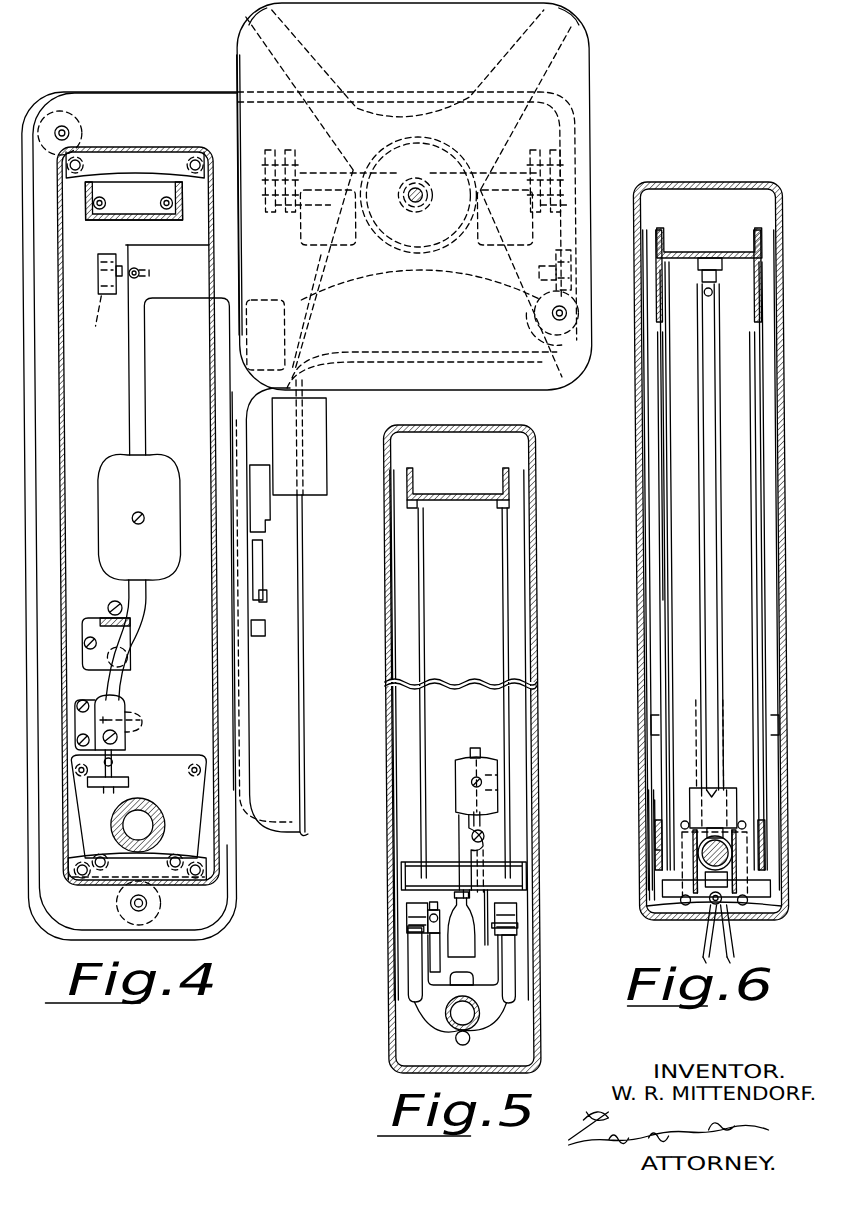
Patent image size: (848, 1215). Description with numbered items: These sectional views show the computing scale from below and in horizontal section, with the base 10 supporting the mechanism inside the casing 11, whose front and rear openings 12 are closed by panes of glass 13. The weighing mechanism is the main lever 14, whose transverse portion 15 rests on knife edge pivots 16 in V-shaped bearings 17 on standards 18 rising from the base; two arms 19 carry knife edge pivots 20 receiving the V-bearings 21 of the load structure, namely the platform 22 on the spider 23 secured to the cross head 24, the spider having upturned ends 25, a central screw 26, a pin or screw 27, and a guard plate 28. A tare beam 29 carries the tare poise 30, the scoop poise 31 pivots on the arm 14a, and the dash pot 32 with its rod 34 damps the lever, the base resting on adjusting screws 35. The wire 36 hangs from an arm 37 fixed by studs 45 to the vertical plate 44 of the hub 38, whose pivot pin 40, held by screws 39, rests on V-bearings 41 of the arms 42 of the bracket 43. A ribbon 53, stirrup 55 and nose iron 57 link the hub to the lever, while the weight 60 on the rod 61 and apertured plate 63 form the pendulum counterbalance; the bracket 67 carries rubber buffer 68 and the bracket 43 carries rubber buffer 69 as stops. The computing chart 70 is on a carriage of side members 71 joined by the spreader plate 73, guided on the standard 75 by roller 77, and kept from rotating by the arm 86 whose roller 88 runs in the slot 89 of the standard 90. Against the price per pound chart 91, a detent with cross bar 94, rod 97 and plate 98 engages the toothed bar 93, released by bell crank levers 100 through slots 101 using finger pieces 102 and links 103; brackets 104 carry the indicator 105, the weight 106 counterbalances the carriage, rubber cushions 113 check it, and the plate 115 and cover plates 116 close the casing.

In FIG. 4, the base 10 is at (95, 97).
In FIG. 4, the casing 11 is at (138, 151).
In FIG. 5, the casing 11 is at (533, 438).
In FIG. 6, the casing 11 is at (700, 186).
In FIG. 5, the openings 12 is at (383, 606).
In FIG. 6, the openings 12 is at (640, 547).
In FIG. 5, the panes of glass 13 is at (383, 753).
In FIG. 6, the panes of glass 13 is at (643, 598).
In FIG. 4, the main lever 14 is at (135, 381).
In FIG. 4, the arm 14a is at (243, 723).
In FIG. 4, the transverse portion 15 is at (167, 267).
In FIG. 4, the knife edge pivots 16 is at (127, 282).
In FIG. 4, the V-shaped bearings 17 is at (89, 322).
In FIG. 4, the standards 18 is at (97, 262).
In FIG. 4, the arms 19 is at (292, 233).
In FIG. 4, the knife edge pivots 20 is at (292, 193).
In FIG. 4, the V-bearings 21 is at (305, 173).
In FIG. 4, the platform 22 is at (414, 196).
In FIG. 4, the spider 23 is at (512, 60).
In FIG. 4, the cross head 24 is at (528, 173).
In FIG. 4, the upturned ends 25 is at (574, 8).
In FIG. 4, the central screw 26 is at (422, 202).
In FIG. 4, the pin or screw 27 is at (405, 193).
In FIG. 4, the guard plate 28 is at (241, 210).
In FIG. 4, the tare beam 29 is at (305, 594).
In FIG. 4, the tare poise 30 is at (310, 476).
In FIG. 4, the scoop poise 31 is at (265, 500).
In FIG. 4, the dash pot 32 is at (128, 712).
In FIG. 4, the rod 34 is at (145, 721).
In FIG. 4, the adjusting screws 35 is at (70, 133).
In FIG. 5, the wire 36 is at (518, 930).
In FIG. 5, the arm 37 is at (400, 873).
In FIG. 6, the arm 37 is at (645, 737).
In FIG. 5, the hub 38 is at (430, 958).
In FIG. 5, the screws 39 is at (455, 898).
In FIG. 5, the pivot pin 40 is at (420, 940).
In FIG. 5, the V-bearings 41 is at (407, 918).
In FIG. 5, the arms 42 is at (428, 998).
In FIG. 4, the bracket 43 is at (125, 808).
In FIG. 5, the bracket 43 is at (496, 1022).
In FIG. 5, the vertical plate 44 is at (462, 862).
In FIG. 5, the studs or bosses 45 is at (495, 872).
In FIG. 5, the ribbon 53 is at (420, 978).
In FIG. 4, the stirrup 55 is at (128, 783).
In FIG. 4, the nose iron 57 is at (115, 770).
In FIG. 5, the weight 60 is at (465, 764).
In FIG. 5, the rod 61 is at (478, 750).
In FIG. 5, the annular member or apertured plate 63 is at (472, 896).
In FIG. 4, the bracket 67 is at (100, 637).
In FIG. 4, the rubber buffer 68 is at (128, 660).
In FIG. 5, the rubber buffer 69 is at (478, 980).
In FIG. 6, the computing chart 70 is at (660, 452).
In FIG. 6, the side members 71 is at (700, 772).
In FIG. 6, the spreader plate 73 is at (726, 814).
In FIG. 4, the standard 75 is at (152, 814).
In FIG. 5, the standard 75 is at (446, 1020).
In FIG. 6, the roller 77 is at (746, 910).
In FIG. 6, the arm 86 is at (712, 406).
In FIG. 6, the roller 88 is at (716, 274).
In FIG. 6, the slot 89 is at (712, 256).
In FIG. 4, the standard 90 is at (160, 222).
In FIG. 5, the standard 90 is at (432, 493).
In FIG. 6, the standard 90 is at (667, 252).
In FIG. 6, the price per pound chart 91 is at (656, 791).
In FIG. 6, the toothed bar 93 is at (690, 840).
In FIG. 6, the cross bar 94 is at (701, 745).
In FIG. 6, the rod 97 is at (718, 771).
In FIG. 6, the plate 98 is at (724, 792).
In FIG. 6, the bell crank levers 100 is at (716, 912).
In FIG. 6, the vertical slot 101 is at (735, 914).
In FIG. 6, the finger pieces 102 is at (706, 914).
In FIG. 6, the links 103 is at (655, 871).
In FIG. 6, the bracket 104 is at (672, 886).
In FIG. 6, the pointer or indicator 105 is at (660, 836).
In FIG. 4, the weight 106 is at (130, 828).
In FIG. 5, the weight 106 is at (451, 1028).
In FIG. 6, the weight 106 is at (726, 866).
In FIG. 5, the rubber cushions 113 is at (457, 1043).
In FIG. 6, the plate 115 is at (659, 320).
In FIG. 5, the cover plates 116 is at (424, 647).
In FIG. 6, the cover plates 116 is at (690, 571).